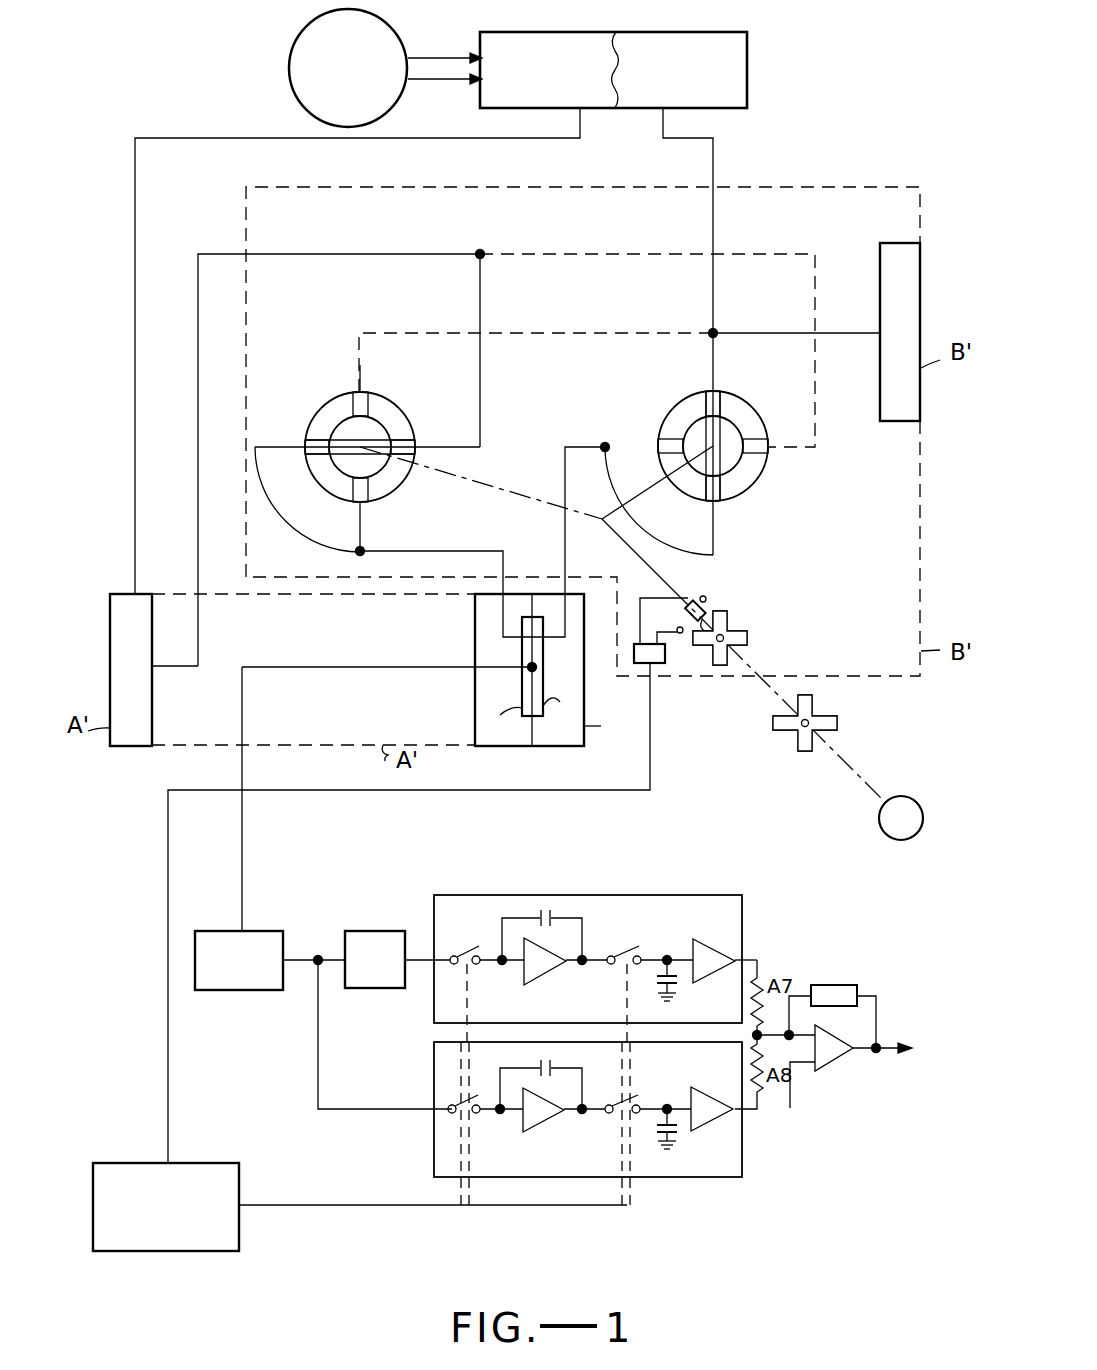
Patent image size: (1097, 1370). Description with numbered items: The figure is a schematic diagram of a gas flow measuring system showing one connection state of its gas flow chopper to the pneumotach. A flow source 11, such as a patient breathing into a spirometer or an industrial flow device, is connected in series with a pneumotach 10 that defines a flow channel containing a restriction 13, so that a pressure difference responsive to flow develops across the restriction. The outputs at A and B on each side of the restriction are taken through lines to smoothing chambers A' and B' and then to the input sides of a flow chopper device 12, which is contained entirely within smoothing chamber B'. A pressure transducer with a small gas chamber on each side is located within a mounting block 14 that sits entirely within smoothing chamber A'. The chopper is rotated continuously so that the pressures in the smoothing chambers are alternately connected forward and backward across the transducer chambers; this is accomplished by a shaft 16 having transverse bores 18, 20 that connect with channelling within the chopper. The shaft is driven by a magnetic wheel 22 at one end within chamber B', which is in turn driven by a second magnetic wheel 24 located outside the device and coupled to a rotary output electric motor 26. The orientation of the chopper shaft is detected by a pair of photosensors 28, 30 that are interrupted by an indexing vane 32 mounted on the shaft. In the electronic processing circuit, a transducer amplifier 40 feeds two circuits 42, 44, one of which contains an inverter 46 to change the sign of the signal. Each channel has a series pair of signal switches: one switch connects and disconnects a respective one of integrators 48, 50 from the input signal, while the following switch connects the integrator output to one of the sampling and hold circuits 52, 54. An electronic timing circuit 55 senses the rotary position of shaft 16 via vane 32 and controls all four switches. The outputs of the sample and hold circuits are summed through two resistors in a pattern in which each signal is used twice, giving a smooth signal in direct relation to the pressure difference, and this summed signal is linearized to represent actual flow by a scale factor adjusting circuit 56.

The pneumotach 10 is at (543, 32).
The flow source 11 is at (303, 47).
The flow chopper device 12 is at (642, 428).
The restriction 13 is at (617, 62).
The mounting block 14 is at (553, 756).
The shaft 16 is at (378, 418).
The transverse bore 18 is at (707, 437).
The transverse bore 20 is at (345, 440).
The magnetic wheel 22 is at (746, 635).
The second magnetic wheel 24 is at (838, 723).
The electric motor 26 is at (918, 805).
The photosensor 28 is at (706, 596).
The photosensor 30 is at (680, 634).
The indexing vane 32 is at (706, 618).
The transducer amplifier 40 is at (262, 923).
The circuit 42 is at (572, 882).
The circuit 44 is at (573, 1222).
The inverter 46 is at (362, 931).
The integrator 48 is at (568, 933).
The integrator 50 is at (562, 1080).
The sampling and hold circuit 52 is at (700, 930).
The sampling and hold circuit 54 is at (699, 1078).
The electronic timing circuit 55 is at (205, 1156).
The scale factor adjusting circuit 56 is at (890, 1004).